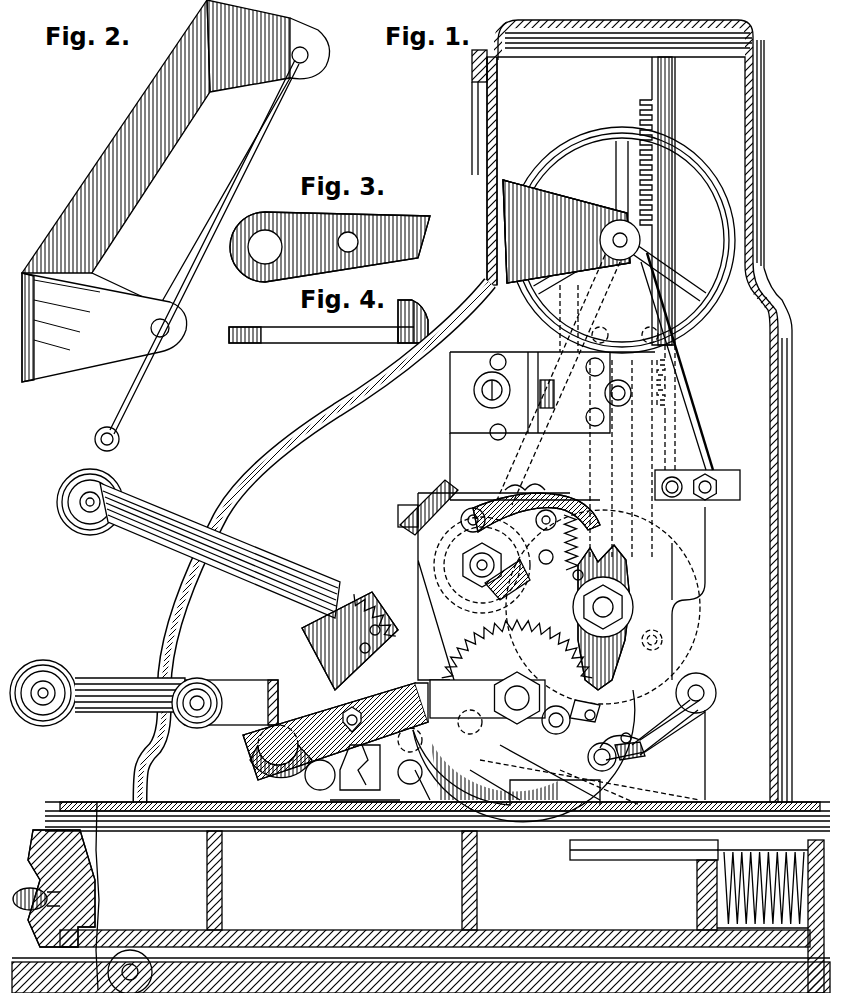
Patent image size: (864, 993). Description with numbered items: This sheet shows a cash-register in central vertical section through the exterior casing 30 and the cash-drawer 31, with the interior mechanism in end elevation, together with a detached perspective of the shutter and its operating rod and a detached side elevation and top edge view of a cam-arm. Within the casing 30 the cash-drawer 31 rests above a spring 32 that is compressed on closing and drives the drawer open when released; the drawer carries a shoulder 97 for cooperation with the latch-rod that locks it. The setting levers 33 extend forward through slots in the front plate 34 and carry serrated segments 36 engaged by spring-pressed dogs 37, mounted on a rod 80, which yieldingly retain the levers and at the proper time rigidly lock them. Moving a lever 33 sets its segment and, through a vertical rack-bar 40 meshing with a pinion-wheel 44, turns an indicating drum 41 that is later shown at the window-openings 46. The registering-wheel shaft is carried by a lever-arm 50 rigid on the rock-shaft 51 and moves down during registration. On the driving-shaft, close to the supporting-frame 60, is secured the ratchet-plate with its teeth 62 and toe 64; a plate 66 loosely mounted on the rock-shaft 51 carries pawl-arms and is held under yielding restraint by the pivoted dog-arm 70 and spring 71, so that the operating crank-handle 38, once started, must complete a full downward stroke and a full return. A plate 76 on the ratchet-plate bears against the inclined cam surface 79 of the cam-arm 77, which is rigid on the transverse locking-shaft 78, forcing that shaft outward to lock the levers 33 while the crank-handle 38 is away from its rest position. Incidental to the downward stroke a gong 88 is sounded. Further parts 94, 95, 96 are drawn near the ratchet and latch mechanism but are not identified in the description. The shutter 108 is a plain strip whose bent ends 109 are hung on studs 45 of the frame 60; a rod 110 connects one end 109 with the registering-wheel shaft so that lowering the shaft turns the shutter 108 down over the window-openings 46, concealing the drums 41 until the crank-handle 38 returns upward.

In FIG. 1, the housing 30 is at (451, 411).
In FIG. 1, the base 31 is at (421, 897).
In FIG. 1, the spring 32 is at (722, 888).
In FIG. 1, the arm 33 is at (168, 520).
In FIG. 1, the curved guard 34 is at (248, 507).
In FIG. 1, the plate 36 is at (478, 590).
In FIG. 1, the toothed segment 37 is at (300, 644).
In FIG. 1, the pivot block 38 is at (225, 703).
In FIG. 1, the rack 40 is at (670, 560).
In FIG. 1, the wheel 41 is at (562, 168).
In FIG. 1, the pivot 44 is at (614, 222).
In FIG. 1, the link 45 is at (655, 361).
In FIG. 1, the bracket 46 is at (487, 226).
In FIG. 1, the gear 50 is at (476, 574).
In FIG. 1, the shaft nut 51 is at (625, 606).
In FIG. 1, the bracket 60 is at (552, 456).
In FIG. 1, the ratchet 62 is at (580, 690).
In FIG. 1, the pawl 64 is at (600, 712).
In FIG. 1, the cam plate 66 is at (626, 562).
In FIG. 1, the lever 70 is at (575, 492).
In FIG. 1, the spring 71 is at (590, 508).
In FIG. 1, the plate 76 is at (465, 767).
In FIG. 3, the lever 77 is at (352, 228).
In FIG. 4, the lever 77 is at (313, 346).
In FIG. 1, the lever 77 is at (335, 731).
In FIG. 1, the roller 78 is at (258, 738).
In FIG. 4, the hook 79 is at (418, 312).
In FIG. 1, the stop 80 is at (363, 764).
In FIG. 1, the frame 88 is at (700, 618).
In FIG. 1, the arm 94 is at (662, 735).
In FIG. 1, the link 95 is at (690, 738).
In FIG. 1, the rod 96 is at (710, 784).
In FIG. 1, the slide bar 97 is at (660, 850).
In FIG. 2, the plate 108 is at (132, 192).
In FIG. 1, the plate 108 is at (503, 186).
In FIG. 2, the hole 109 is at (256, 88).
In FIG. 2, the rod 110 is at (221, 214).
In FIG. 1, the rod 110 is at (560, 340).